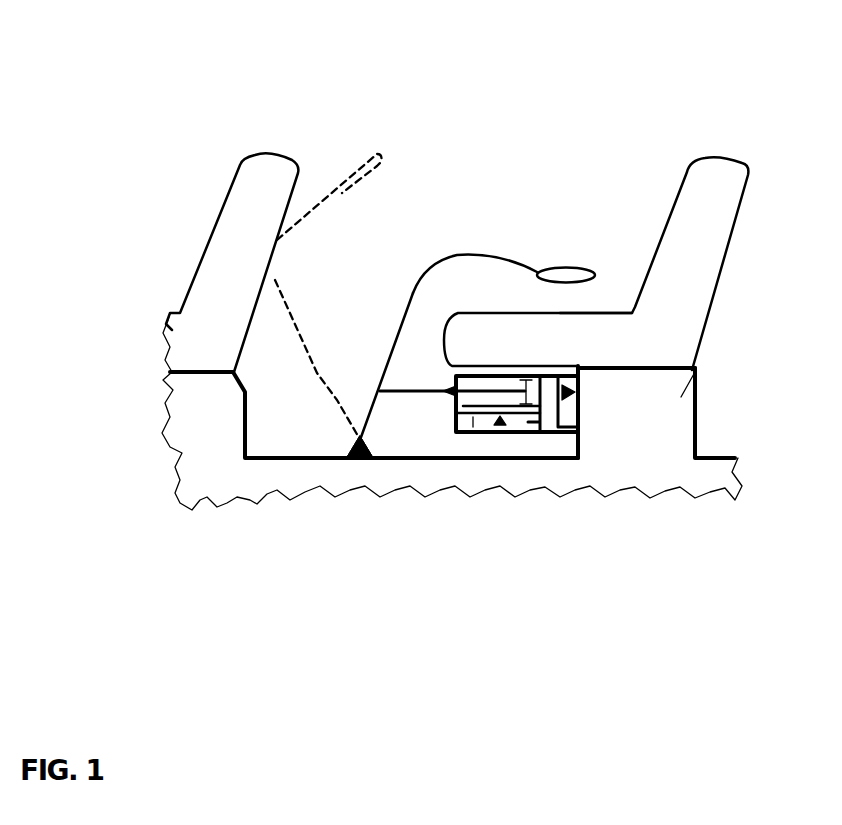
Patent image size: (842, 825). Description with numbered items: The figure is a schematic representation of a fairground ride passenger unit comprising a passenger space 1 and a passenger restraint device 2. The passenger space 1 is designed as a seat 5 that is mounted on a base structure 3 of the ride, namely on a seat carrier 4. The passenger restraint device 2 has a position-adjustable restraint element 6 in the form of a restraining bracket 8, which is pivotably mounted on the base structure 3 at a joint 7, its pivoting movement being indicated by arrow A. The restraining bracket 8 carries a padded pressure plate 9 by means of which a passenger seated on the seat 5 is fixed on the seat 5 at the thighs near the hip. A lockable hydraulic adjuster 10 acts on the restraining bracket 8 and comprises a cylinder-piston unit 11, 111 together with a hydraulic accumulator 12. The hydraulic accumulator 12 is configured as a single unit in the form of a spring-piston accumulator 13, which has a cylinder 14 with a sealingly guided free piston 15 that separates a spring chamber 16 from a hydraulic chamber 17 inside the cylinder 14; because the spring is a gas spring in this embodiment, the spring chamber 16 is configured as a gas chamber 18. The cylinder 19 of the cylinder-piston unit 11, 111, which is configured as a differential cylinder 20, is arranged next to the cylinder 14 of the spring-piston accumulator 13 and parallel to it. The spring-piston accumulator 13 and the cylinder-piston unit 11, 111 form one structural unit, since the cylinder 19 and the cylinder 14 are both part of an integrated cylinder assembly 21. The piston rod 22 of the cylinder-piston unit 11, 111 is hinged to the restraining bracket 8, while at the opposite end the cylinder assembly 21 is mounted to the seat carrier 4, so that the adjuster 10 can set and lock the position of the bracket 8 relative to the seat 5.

The passenger space 1 is at (556, 148).
The passenger restraint device 2 is at (345, 412).
The base structure 3 is at (729, 426).
The seat carrier 4 is at (703, 385).
The seat 5 is at (710, 185).
The position-adjustable restraint element 6 is at (411, 142).
The joint 7 is at (360, 460).
The restraining bracket 8 is at (473, 253).
The padded pressure plate 9 is at (577, 268).
The lockable hydraulic adjuster 10 is at (496, 448).
The cylinder-piston unit 11 is at (387, 344).
The cylinder-piston unit 111 is at (387, 344).
The differential cylinder 20 is at (470, 350).
The hydraulic accumulator 12 is at (621, 466).
The spring-piston accumulator 13 is at (565, 442).
The cylinder 14 is at (537, 433).
The free piston 15 is at (512, 425).
The spring chamber 16 is at (439, 499).
The gas chamber 18 is at (473, 422).
The hydraulic chamber 17 is at (580, 430).
The cylinder 19 is at (523, 367).
The integrated cylinder assembly 21 is at (580, 372).
The piston rod 22 is at (412, 394).
The arrow A is at (328, 362).